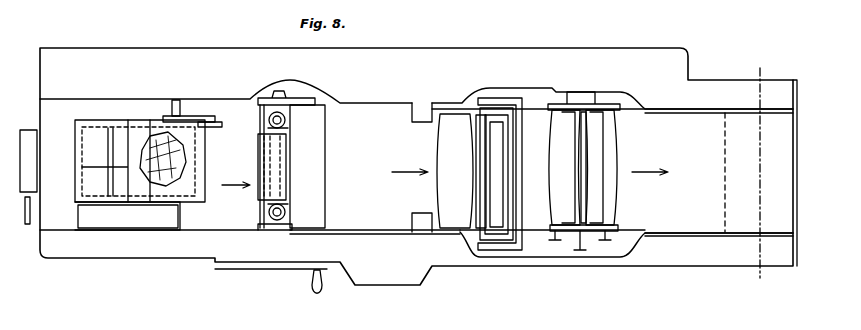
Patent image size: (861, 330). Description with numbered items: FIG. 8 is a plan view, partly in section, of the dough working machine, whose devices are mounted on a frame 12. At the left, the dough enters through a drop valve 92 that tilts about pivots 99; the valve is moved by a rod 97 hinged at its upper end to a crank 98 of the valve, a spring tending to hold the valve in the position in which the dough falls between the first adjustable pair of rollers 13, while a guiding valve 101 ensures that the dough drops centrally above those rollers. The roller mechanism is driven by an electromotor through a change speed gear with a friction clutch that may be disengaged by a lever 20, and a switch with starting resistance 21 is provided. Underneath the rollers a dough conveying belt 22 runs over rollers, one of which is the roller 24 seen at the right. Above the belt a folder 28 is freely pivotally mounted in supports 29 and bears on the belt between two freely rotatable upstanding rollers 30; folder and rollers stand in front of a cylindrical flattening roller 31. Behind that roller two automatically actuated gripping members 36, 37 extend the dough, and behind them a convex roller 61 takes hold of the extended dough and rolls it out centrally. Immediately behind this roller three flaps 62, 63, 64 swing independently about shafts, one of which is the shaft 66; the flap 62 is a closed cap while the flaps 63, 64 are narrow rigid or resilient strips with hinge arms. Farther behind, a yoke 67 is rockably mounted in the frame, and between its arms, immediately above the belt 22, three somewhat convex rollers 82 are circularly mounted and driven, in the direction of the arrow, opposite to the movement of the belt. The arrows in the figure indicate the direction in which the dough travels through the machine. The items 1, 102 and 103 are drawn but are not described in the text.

The work piece 1 is at (170, 204).
The frame 12 is at (537, 238).
The pair of rollers 13 is at (114, 178).
The lever 20 is at (312, 278).
The switch with starting resistance 21 is at (38, 160).
The dough conveying belt 22 is at (700, 222).
The roller 24 is at (792, 214).
The folder 28 is at (275, 164).
The supports 29 is at (272, 98).
The upstanding rollers 30 is at (286, 122).
The cylindrical flattening roller 31 is at (312, 156).
The gripping member 36 is at (412, 220).
The gripping member 37 is at (412, 116).
The roller 61 is at (447, 150).
The flap 62 is at (490, 136).
The flap 63 is at (504, 162).
The flap 64 is at (513, 192).
The shaft 66 is at (483, 172).
The yoke 67 is at (582, 195).
The convex rollers 82 is at (592, 150).
The drop valve 92 is at (133, 196).
The rod 97 is at (222, 125).
The crank 98 is at (192, 116).
The pivots 99 is at (176, 100).
The guiding valve 101 is at (100, 190).
The casing 102 is at (462, 53).
The partition 103 is at (700, 162).